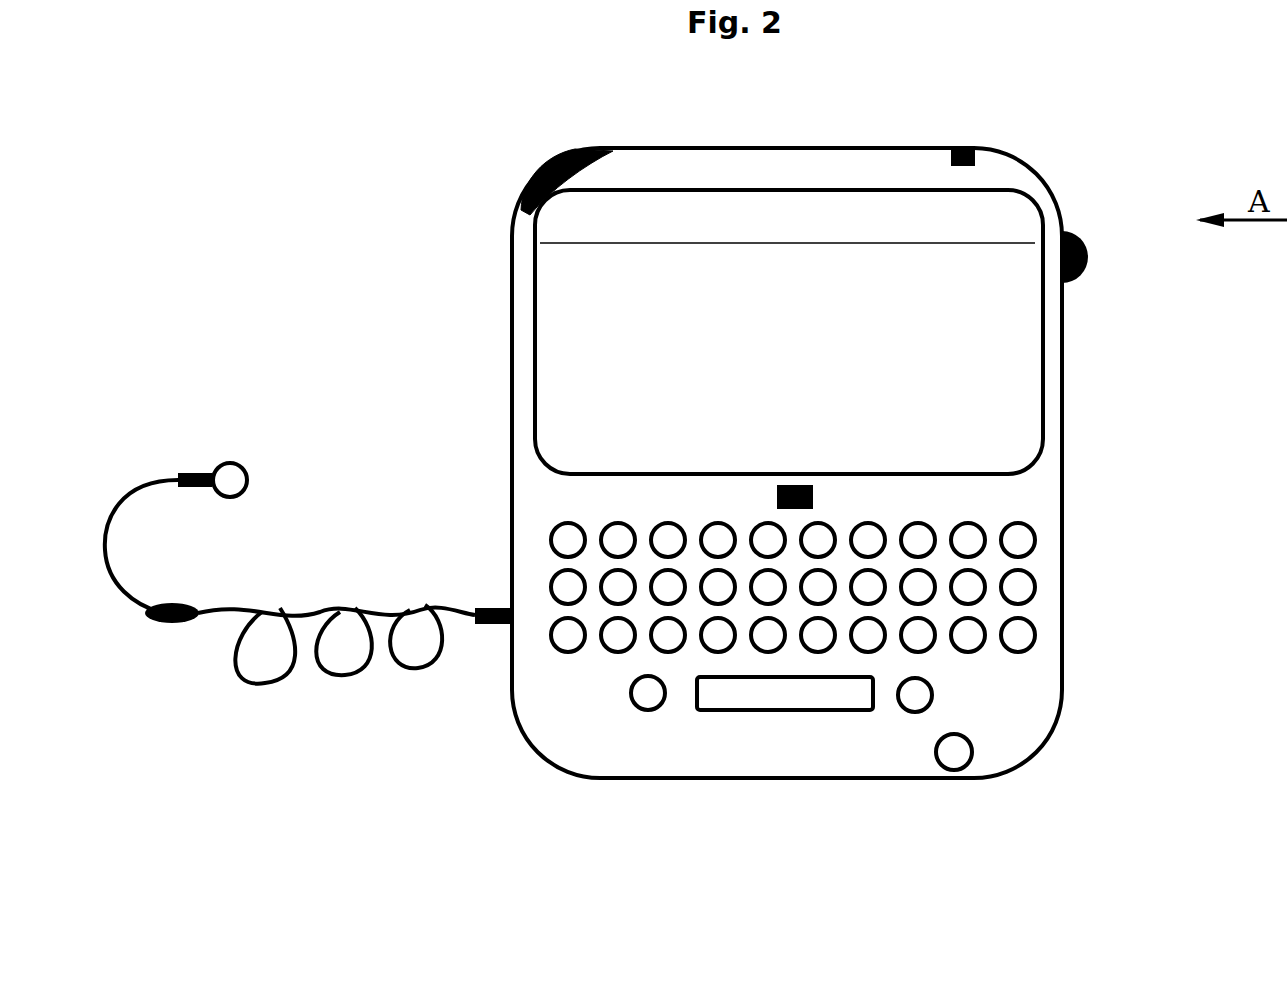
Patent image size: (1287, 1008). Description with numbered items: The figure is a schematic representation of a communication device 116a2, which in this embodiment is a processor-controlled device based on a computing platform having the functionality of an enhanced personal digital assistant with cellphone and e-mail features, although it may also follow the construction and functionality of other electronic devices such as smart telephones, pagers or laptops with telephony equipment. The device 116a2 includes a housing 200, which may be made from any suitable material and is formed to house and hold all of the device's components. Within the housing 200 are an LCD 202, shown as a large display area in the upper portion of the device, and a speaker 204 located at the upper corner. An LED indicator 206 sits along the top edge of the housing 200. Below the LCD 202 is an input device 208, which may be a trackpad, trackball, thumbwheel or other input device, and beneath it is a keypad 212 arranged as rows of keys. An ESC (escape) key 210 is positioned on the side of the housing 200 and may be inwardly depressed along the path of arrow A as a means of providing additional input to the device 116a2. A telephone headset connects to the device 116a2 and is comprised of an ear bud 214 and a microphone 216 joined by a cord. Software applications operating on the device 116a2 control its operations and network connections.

The device 116a2 is at (827, 523).
The housing 200 is at (1020, 697).
The LCD 202 is at (615, 331).
The speaker 204 is at (522, 181).
The LED indicator 206 is at (1000, 160).
The input device 208 is at (825, 497).
The ESC key 210 is at (1103, 252).
The keypad 212 is at (1022, 510).
The ear bud 214 is at (258, 473).
The microphone 216 is at (198, 600).